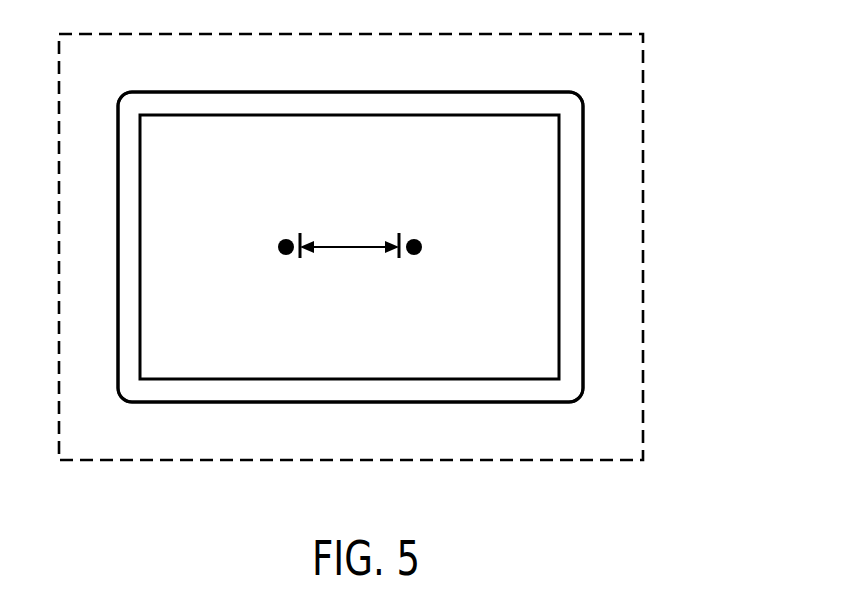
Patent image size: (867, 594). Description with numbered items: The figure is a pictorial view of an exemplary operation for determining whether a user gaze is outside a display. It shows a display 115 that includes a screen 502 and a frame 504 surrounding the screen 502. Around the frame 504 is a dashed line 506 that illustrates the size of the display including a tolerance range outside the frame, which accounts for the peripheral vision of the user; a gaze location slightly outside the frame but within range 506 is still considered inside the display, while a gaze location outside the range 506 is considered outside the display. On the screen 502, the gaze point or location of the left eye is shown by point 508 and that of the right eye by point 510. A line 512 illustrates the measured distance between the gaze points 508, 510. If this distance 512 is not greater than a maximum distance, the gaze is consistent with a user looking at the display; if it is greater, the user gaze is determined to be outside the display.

The display 115 is at (598, 200).
The screen 502 is at (513, 379).
The frame 504 is at (583, 291).
The dashed line 506 is at (642, 113).
The point 508 is at (287, 238).
The point 510 is at (414, 238).
The line 512 is at (352, 253).